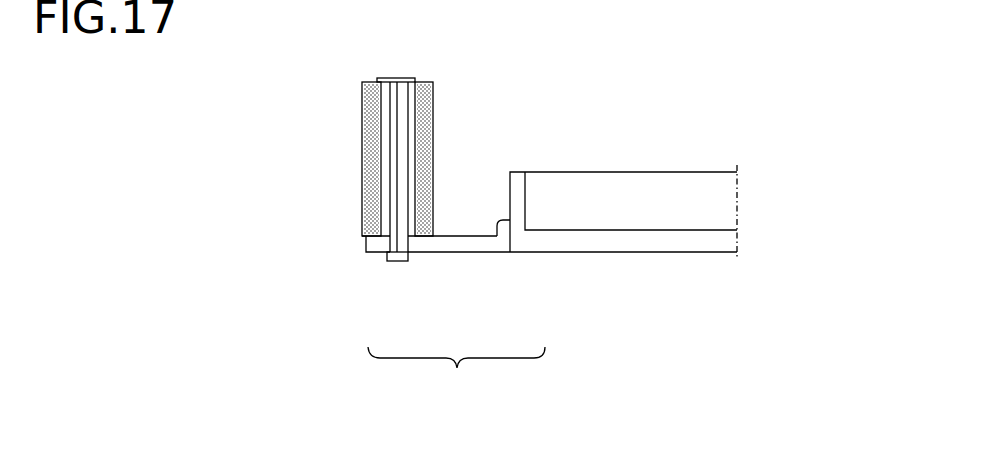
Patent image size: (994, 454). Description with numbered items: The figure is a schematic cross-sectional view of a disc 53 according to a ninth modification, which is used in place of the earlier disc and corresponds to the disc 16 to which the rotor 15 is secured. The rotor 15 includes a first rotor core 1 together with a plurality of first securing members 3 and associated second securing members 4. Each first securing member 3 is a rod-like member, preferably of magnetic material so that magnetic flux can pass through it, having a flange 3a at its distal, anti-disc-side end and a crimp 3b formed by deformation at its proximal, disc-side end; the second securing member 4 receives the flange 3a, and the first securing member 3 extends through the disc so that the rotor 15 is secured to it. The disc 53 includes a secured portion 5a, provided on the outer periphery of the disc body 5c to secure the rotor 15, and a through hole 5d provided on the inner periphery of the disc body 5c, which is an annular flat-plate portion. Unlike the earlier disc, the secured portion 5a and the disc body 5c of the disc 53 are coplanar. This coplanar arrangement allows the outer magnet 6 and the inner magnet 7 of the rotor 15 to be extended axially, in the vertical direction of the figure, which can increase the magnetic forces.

The rotor 15 is at (298, 119).
The first rotor core 1 is at (408, 122).
The first securing member 3 is at (402, 160).
The flange 3a is at (400, 80).
The crimp 3b is at (405, 258).
The second securing member 4 is at (417, 80).
The outer magnet 6 is at (375, 199).
The inner magnet 7 is at (432, 160).
The secured portion 5a is at (380, 254).
The disc body 5c is at (462, 245).
The through hole 5d is at (537, 207).
The disc 53 is at (456, 376).
The disc 16 is at (456, 357).